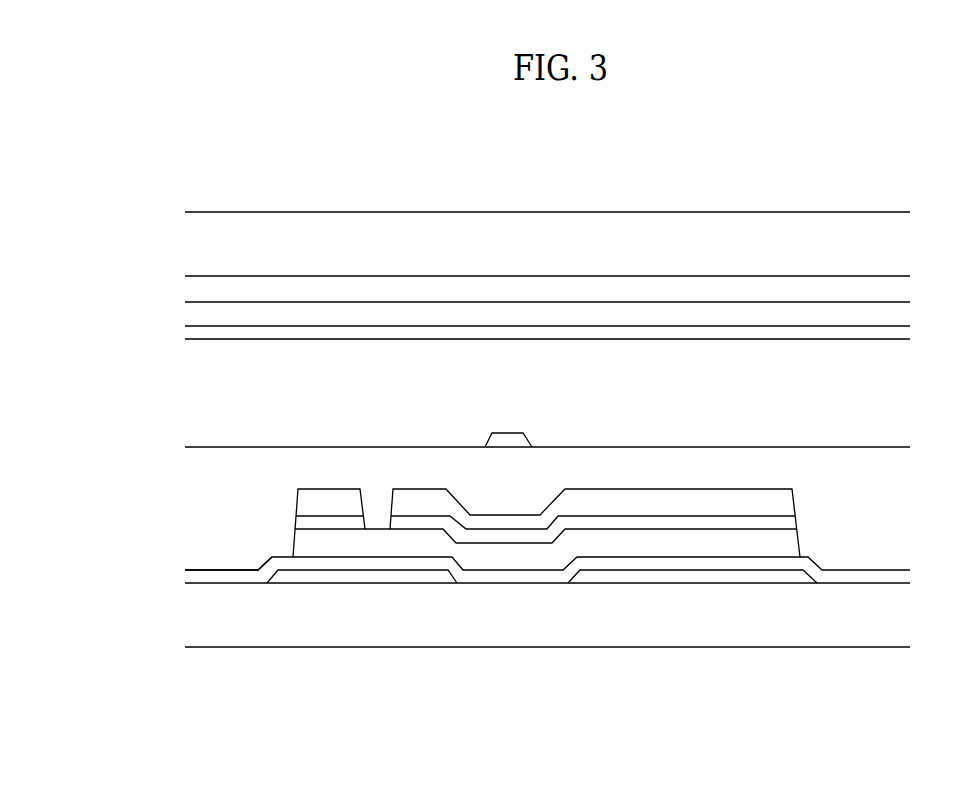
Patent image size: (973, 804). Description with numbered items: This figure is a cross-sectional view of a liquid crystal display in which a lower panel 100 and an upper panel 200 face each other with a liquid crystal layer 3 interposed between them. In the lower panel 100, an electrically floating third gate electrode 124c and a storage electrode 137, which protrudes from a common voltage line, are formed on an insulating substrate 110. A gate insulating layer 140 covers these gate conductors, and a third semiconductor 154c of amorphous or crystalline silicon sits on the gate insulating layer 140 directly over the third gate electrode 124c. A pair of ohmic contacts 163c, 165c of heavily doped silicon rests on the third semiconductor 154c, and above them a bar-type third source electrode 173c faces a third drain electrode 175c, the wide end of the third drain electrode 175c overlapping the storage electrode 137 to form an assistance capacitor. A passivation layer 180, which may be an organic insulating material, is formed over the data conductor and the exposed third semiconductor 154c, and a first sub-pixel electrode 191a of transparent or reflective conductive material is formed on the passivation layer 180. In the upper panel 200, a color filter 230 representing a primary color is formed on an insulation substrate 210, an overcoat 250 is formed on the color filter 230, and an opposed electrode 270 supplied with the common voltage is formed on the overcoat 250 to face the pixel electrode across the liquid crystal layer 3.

The liquid crystal layer 3 is at (916, 340).
The lower panel 100 is at (575, 440).
The insulating substrate 110 is at (547, 623).
The third gate electrode 124c is at (415, 577).
The storage electrode 137 is at (625, 577).
The gate insulating layer 140 is at (856, 577).
The third semiconductor 154c is at (493, 557).
The ohmic contact 163c is at (355, 523).
The ohmic contact 165c is at (695, 523).
The third source electrode 173c is at (320, 508).
The third drain electrode 175c is at (757, 502).
The passivation layer 180 is at (228, 565).
The first sub-pixel electrode 191a is at (503, 442).
The upper panel 200 is at (575, 246).
The insulation substrate 210 is at (715, 232).
The color filter 230 is at (291, 287).
The overcoat 250 is at (602, 312).
The opposed electrode 270 is at (822, 332).